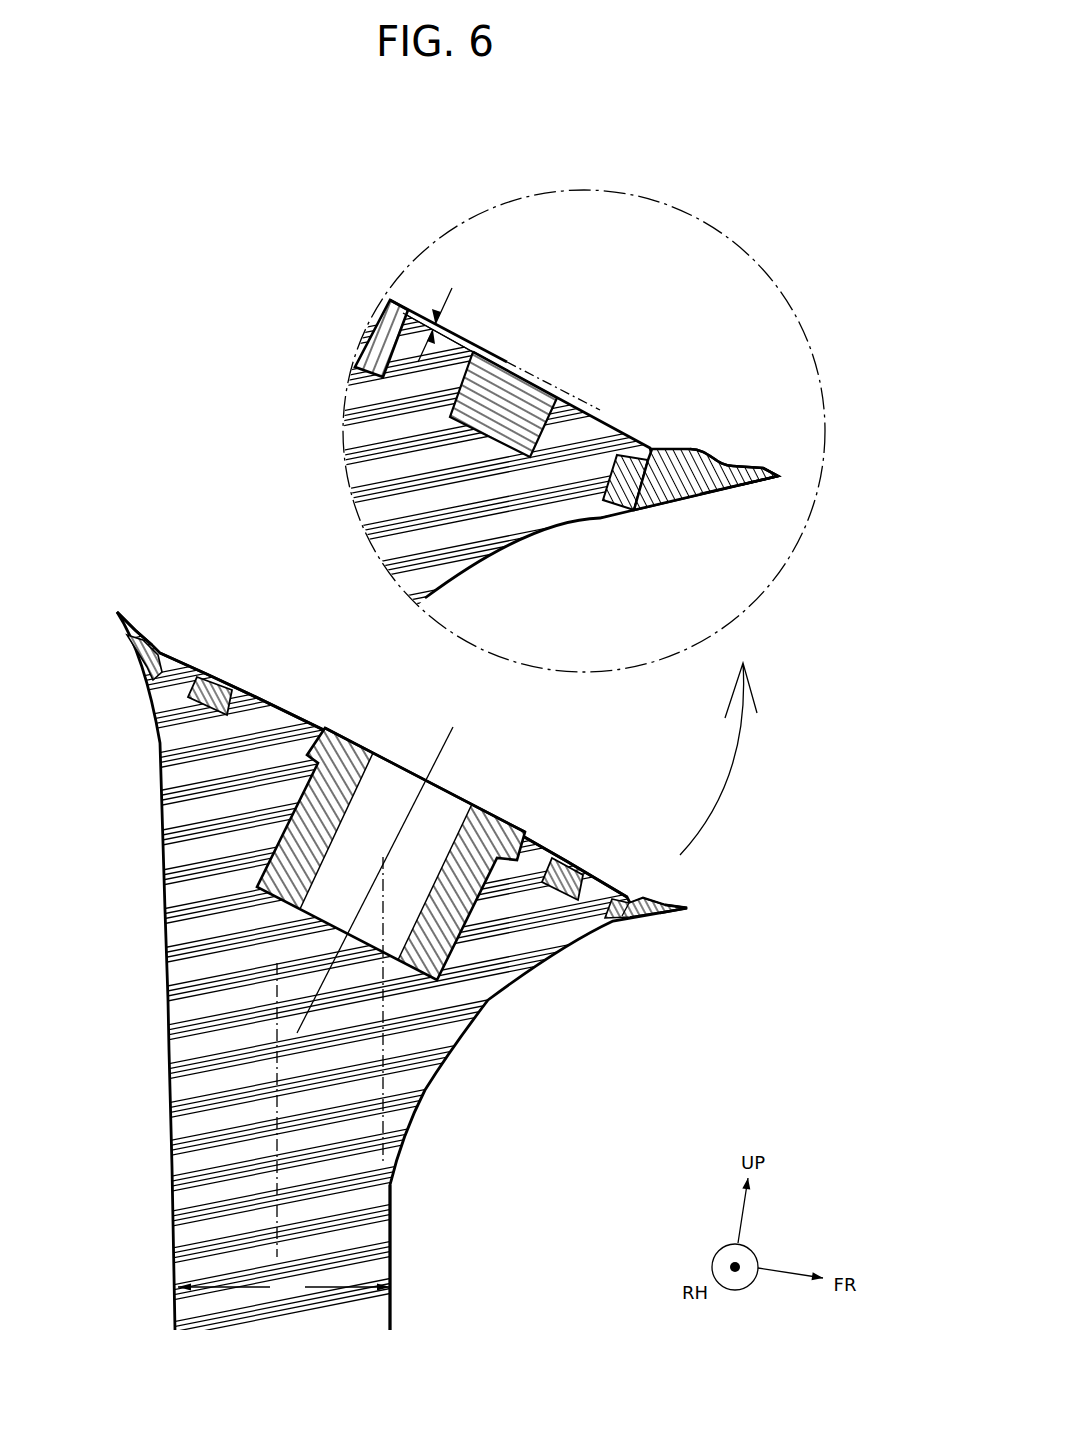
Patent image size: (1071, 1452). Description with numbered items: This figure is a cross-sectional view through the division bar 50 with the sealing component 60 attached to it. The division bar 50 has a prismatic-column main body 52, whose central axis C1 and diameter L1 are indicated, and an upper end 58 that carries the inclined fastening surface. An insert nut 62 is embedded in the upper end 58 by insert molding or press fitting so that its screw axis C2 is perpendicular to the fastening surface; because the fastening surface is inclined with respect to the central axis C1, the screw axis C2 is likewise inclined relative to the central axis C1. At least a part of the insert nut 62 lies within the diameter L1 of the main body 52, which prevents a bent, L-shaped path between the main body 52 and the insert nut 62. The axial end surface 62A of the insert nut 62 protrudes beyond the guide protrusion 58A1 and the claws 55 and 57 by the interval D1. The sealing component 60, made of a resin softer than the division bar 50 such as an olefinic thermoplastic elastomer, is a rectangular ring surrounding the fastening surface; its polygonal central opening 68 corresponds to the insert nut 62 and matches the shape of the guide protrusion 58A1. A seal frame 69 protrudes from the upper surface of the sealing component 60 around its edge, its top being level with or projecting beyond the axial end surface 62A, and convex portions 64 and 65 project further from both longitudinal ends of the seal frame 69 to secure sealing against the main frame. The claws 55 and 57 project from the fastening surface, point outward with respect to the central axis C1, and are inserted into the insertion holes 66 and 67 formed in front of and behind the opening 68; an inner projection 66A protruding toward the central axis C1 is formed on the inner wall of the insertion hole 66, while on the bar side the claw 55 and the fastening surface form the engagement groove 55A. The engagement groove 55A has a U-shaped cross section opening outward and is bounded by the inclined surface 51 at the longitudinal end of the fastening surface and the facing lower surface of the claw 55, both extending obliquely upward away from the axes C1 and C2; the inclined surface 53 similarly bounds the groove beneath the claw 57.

The division bar 50 is at (450, 776).
The inclined surface 51 is at (650, 917).
The main body 52 is at (393, 1248).
The inclined surface 53 is at (132, 645).
The claw 55 is at (592, 893).
The engagement groove 55A is at (640, 481).
The claw 57 is at (195, 677).
The upper end 58 is at (483, 1000).
The guide protrusion 58A1 is at (278, 722).
The sealing component 60 is at (701, 927).
The insert nut 62 is at (355, 800).
The axial end surface 62A is at (373, 750).
The convex portion 64 is at (688, 902).
The convex portion 65 is at (118, 610).
The insertion hole 66 is at (600, 918).
The inner projection 66A is at (620, 515).
The insertion hole 67 is at (158, 745).
The opening 68 is at (178, 675).
The seal frame 69 is at (745, 462).
The central axis C1 is at (268, 1099).
The screw axis C2 is at (384, 933).
The interval D1 is at (450, 311).
The diameter L1 is at (284, 1279).